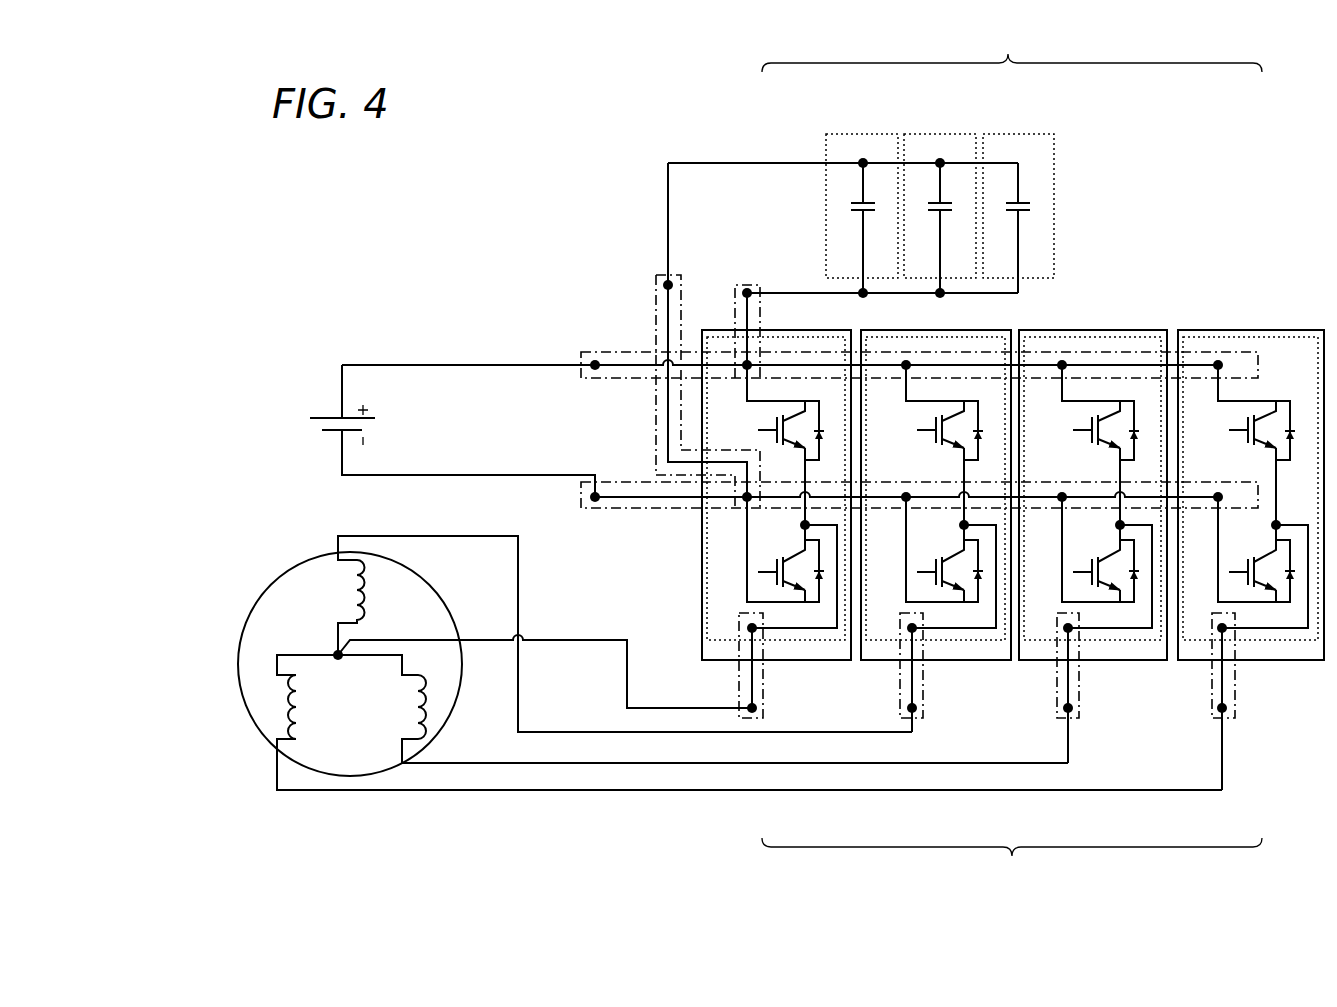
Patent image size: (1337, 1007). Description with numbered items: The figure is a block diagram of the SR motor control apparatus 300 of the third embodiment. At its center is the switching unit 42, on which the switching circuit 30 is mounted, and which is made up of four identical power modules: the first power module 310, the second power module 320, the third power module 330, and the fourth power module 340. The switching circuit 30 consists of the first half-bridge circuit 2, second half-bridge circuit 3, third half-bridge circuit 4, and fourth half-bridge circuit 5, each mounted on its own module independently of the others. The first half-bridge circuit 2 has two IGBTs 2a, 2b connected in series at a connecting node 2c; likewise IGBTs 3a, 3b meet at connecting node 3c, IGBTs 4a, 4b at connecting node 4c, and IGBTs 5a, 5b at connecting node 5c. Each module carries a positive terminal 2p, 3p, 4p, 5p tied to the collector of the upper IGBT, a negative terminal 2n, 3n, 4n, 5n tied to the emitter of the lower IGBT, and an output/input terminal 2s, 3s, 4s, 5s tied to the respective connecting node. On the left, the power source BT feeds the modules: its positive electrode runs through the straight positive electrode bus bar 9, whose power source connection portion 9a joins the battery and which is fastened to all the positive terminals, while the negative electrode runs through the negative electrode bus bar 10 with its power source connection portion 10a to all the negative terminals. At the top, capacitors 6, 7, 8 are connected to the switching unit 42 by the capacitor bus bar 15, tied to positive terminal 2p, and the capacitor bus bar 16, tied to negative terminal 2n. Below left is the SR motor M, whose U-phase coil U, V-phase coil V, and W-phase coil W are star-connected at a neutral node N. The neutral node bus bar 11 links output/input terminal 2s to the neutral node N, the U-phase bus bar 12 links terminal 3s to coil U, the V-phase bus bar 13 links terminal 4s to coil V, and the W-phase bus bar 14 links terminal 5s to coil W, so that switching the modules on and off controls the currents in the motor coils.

The SR motor control apparatus 300 is at (487, 235).
The switching unit 42 is at (1012, 53).
The switching circuit 30 is at (1012, 860).
The first power module 310 is at (785, 328).
The second power module 320 is at (905, 328).
The third power module 330 is at (1078, 328).
The fourth power module 340 is at (1240, 328).
The first half-bridge circuit 2 is at (795, 647).
The second half-bridge circuit 3 is at (957, 647).
The third half-bridge circuit 4 is at (1112, 647).
The fourth half-bridge circuit 5 is at (1258, 647).
The IGBT 2a is at (758, 430).
The IGBT 2b is at (758, 572).
The connecting node 2c is at (800, 525).
The positive terminal 2p is at (745, 361).
The negative terminal 2n is at (742, 499).
The output/input terminal 2s is at (747, 628).
The IGBT 3a is at (917, 430).
The IGBT 3b is at (917, 572).
The connecting node 3c is at (959, 525).
The positive terminal 3p is at (904, 361).
The negative terminal 3n is at (904, 500).
The output/input terminal 3s is at (907, 628).
The IGBT 4a is at (1073, 430).
The IGBT 4b is at (1073, 572).
The connecting node 4c is at (1115, 525).
The positive terminal 4p is at (1060, 361).
The negative terminal 4n is at (1060, 500).
The output/input terminal 4s is at (1063, 628).
The IGBT 5a is at (1229, 430).
The IGBT 5b is at (1229, 572).
The connecting node 5c is at (1271, 525).
The positive terminal 5p is at (1216, 361).
The negative terminal 5n is at (1216, 500).
The output/input terminal 5s is at (1217, 628).
The capacitor 6 is at (860, 214).
The capacitor 7 is at (937, 214).
The capacitor 8 is at (1015, 214).
The positive electrode bus bar 9 is at (637, 351).
The power source connection portion 9a is at (595, 372).
The negative electrode bus bar 10 is at (640, 481).
The power source connection portion 10a is at (596, 504).
The neutral node bus bar 11 is at (738, 702).
The U-phase bus bar 12 is at (899, 702).
The V-phase bus bar 13 is at (1056, 702).
The W-phase bus bar 14 is at (1211, 702).
The capacitor bus bar 15 is at (749, 285).
The capacitor bus bar 16 is at (655, 275).
The power source BT is at (322, 428).
The SR motor M is at (278, 575).
The U-phase coil U is at (355, 589).
The V-phase coil V is at (416, 706).
The W-phase coil W is at (293, 706).
The neutral node N is at (338, 661).